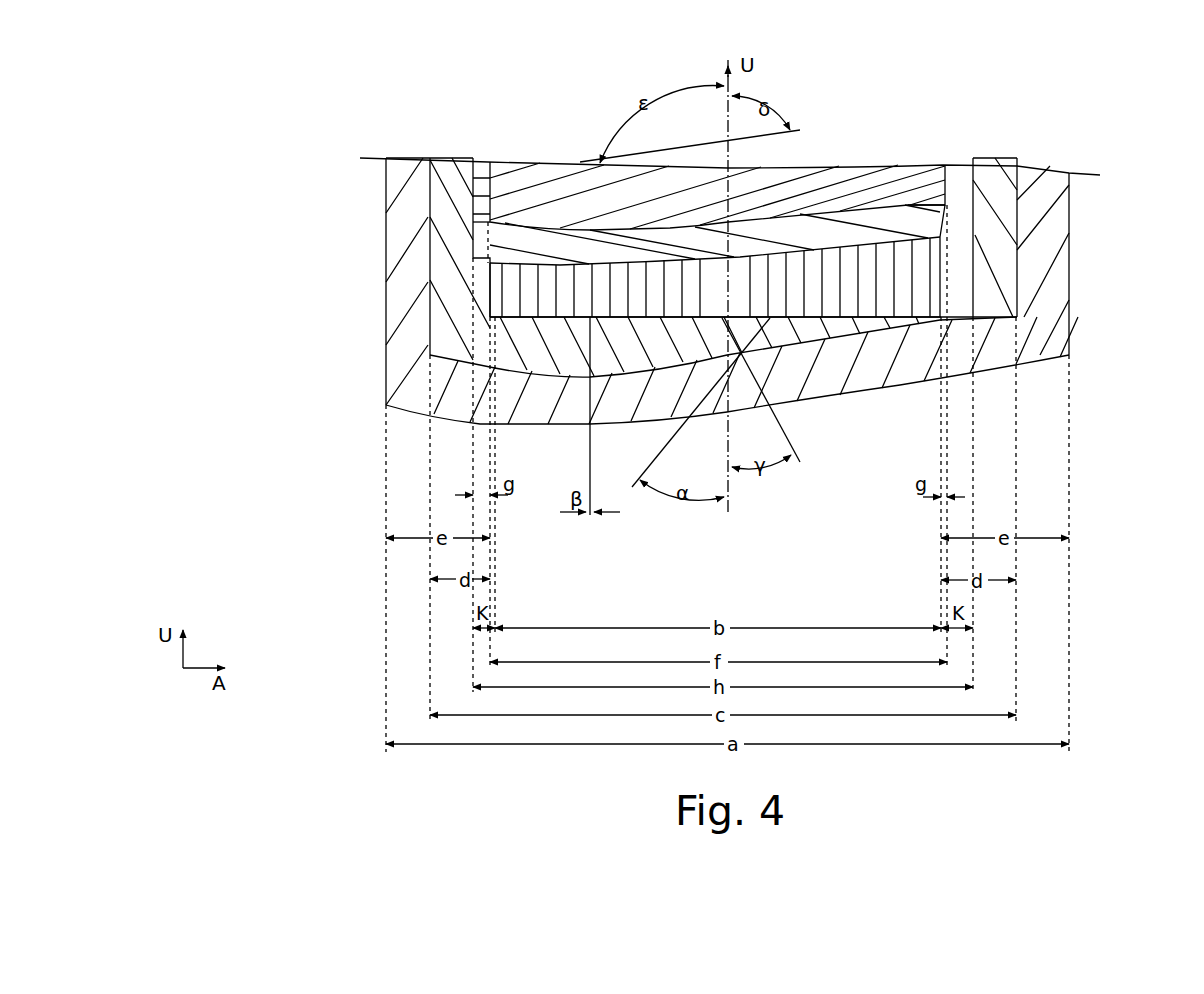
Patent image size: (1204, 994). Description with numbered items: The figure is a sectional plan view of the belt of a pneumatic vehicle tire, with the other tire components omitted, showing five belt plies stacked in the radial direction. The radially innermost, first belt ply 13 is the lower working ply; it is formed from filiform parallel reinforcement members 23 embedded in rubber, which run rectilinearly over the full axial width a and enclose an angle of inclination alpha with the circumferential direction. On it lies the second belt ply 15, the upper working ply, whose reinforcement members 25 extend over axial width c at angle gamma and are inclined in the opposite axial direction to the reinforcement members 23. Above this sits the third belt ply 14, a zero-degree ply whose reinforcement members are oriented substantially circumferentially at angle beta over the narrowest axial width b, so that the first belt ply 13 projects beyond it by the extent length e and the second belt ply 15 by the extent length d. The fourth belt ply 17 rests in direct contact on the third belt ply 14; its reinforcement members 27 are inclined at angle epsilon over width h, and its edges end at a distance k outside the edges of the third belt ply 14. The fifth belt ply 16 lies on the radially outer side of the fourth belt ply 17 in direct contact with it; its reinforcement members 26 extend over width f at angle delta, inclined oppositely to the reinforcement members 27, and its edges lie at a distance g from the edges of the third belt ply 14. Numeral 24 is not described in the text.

The first belt ply 13 is at (1030, 334).
The third belt ply 14 is at (917, 268).
The second belt ply 15 is at (463, 272).
The fifth belt ply 16 is at (880, 170).
The fourth belt ply 17 is at (930, 240).
The reinforcement members 23 is at (1028, 305).
The insert base 24 is at (893, 300).
The reinforcement members 25 is at (460, 308).
The reinforcement members 26 is at (845, 167).
The reinforcement members 27 is at (883, 222).